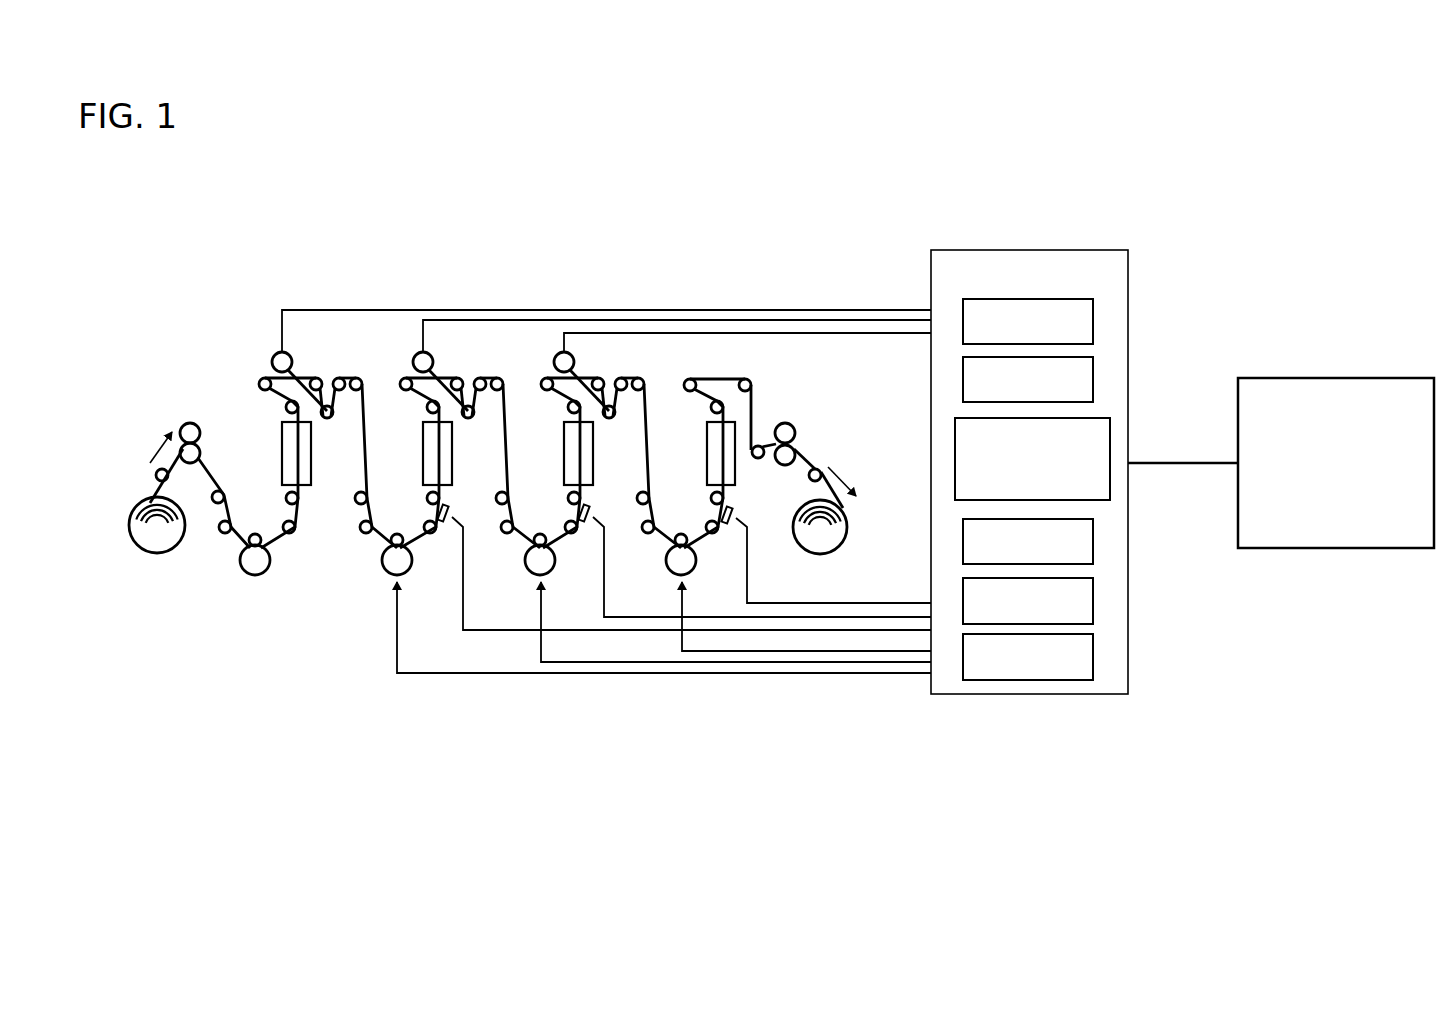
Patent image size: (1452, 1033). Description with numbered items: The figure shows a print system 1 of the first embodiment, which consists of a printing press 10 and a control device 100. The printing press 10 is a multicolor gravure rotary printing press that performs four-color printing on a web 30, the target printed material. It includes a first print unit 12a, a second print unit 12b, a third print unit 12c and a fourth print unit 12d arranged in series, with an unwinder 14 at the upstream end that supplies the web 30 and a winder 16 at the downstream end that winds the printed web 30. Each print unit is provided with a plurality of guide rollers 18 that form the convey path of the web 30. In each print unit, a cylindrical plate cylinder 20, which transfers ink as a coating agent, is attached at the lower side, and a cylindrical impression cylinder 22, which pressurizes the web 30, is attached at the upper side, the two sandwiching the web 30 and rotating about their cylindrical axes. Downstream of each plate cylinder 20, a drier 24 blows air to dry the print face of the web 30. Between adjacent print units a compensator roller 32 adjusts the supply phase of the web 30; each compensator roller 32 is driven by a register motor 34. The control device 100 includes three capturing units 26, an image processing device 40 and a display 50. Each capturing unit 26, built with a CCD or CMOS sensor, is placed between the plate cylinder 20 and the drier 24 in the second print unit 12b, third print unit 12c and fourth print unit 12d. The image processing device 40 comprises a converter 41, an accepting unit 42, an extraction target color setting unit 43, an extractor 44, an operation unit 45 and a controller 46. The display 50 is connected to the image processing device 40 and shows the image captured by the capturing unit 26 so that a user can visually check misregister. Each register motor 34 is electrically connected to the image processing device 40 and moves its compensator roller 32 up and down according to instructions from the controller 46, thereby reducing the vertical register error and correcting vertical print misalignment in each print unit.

The print system 1 is at (741, 767).
The printing press 10 is at (530, 266).
The control device 100 is at (1097, 163).
The first print unit 12a is at (240, 388).
The second print unit 12b is at (382, 388).
The third print unit 12c is at (524, 388).
The fourth print unit 12d is at (668, 388).
The unwinder 14 is at (150, 552).
The winder 16 is at (843, 543).
The guide rollers 18 is at (292, 526).
The plate cylinder 20 is at (257, 576).
The impression cylinder 22 is at (255, 534).
The drier 24 is at (282, 444).
The capturing unit 26 is at (447, 509).
The web 30 is at (155, 492).
The compensator roller 32 is at (329, 419).
The register motor 34 is at (286, 356).
The image processing device 40 is at (1128, 250).
The converter 41 is at (1093, 322).
The accepting unit 42 is at (1093, 376).
The extraction target color setting unit 43 is at (1110, 430).
The extractor 44 is at (1093, 542).
The operation unit 45 is at (1093, 602).
The controller 46 is at (1093, 657).
The display 50 is at (1330, 378).